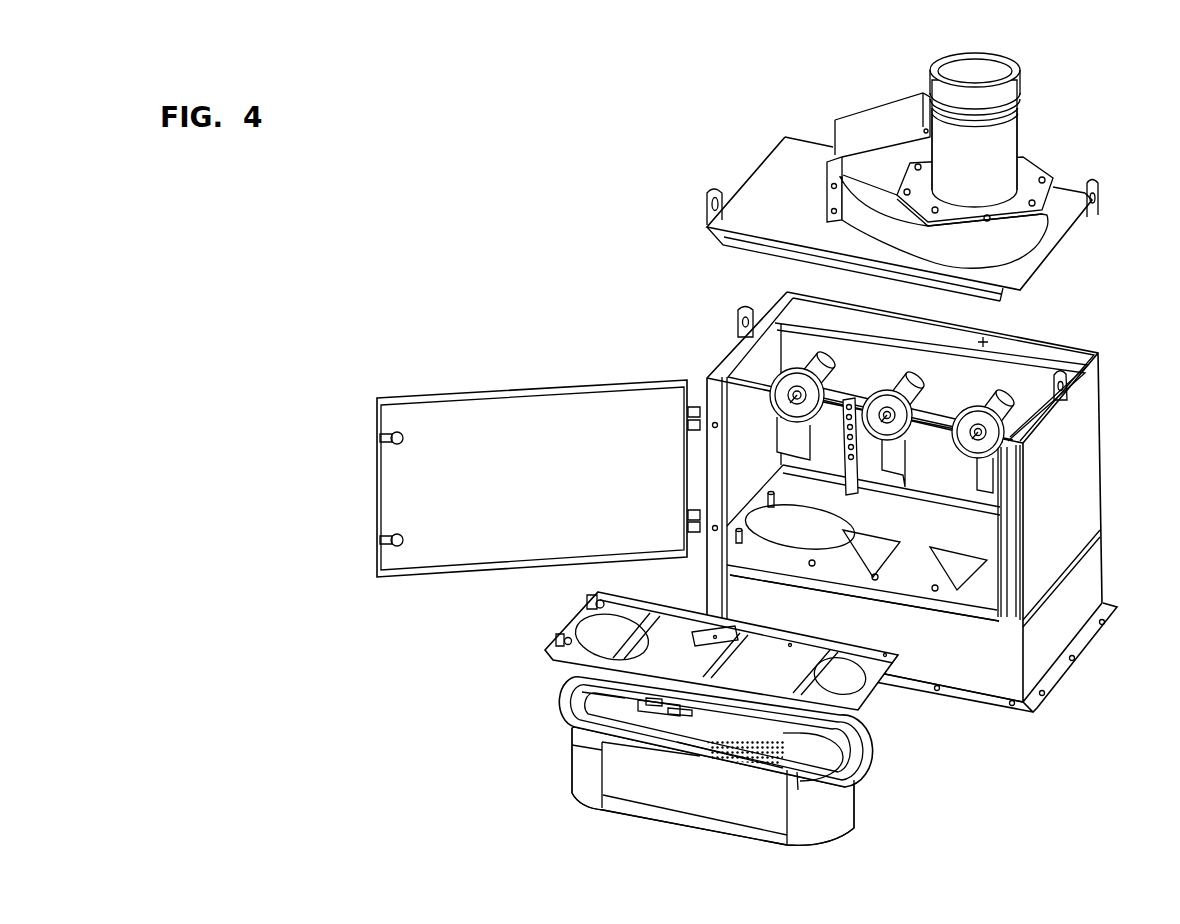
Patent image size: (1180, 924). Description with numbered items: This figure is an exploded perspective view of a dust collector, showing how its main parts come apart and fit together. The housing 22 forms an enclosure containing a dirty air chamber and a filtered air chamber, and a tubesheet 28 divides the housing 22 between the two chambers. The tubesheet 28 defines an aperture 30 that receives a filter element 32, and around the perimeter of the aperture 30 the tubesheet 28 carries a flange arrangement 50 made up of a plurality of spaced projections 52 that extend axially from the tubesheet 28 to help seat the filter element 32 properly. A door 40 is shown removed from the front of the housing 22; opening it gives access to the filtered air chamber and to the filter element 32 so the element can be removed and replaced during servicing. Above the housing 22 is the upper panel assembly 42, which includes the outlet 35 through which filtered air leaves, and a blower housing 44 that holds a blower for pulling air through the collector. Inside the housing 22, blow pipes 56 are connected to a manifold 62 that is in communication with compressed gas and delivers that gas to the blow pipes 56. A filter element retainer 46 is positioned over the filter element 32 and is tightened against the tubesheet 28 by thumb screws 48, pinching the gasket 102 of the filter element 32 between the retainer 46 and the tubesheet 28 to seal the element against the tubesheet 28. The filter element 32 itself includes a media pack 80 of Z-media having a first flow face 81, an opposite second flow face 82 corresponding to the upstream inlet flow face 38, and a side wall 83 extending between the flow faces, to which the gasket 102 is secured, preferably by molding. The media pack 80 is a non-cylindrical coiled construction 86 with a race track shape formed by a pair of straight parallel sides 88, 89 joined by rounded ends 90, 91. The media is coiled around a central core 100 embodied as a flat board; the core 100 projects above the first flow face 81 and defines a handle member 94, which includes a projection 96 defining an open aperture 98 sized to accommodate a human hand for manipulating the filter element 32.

The housing 22 is at (1087, 442).
The tubesheet 28 is at (748, 552).
The aperture 30 is at (989, 595).
The filter element 32 is at (530, 707).
The outlet 35 is at (977, 65).
The upstream (inlet) flow face 38 is at (710, 830).
The door 40 is at (458, 423).
The upper panel assembly 42 is at (778, 162).
The blower housing 44 is at (1033, 233).
The filter element retainer 46 is at (575, 615).
The thumb screws 48 is at (592, 605).
The flange arrangement 50 is at (842, 509).
The projections 52 is at (913, 527).
The blow pipes 56 is at (800, 437).
The manifold 62 is at (840, 352).
The media pack 80 is at (800, 741).
The first flow face 81 is at (595, 712).
The second flow face 82 is at (623, 815).
The side wall 83 is at (582, 773).
The coiled construction 86 is at (817, 758).
The straight parallel side 88 is at (797, 727).
The straight parallel side 89 is at (647, 745).
The rounded end 90 is at (578, 690).
The rounded end 91 is at (843, 752).
The handle member 94 is at (645, 717).
The projection 96 is at (652, 700).
The open aperture 98 is at (694, 713).
The central core 100 is at (712, 720).
The gasket 102 is at (800, 772).